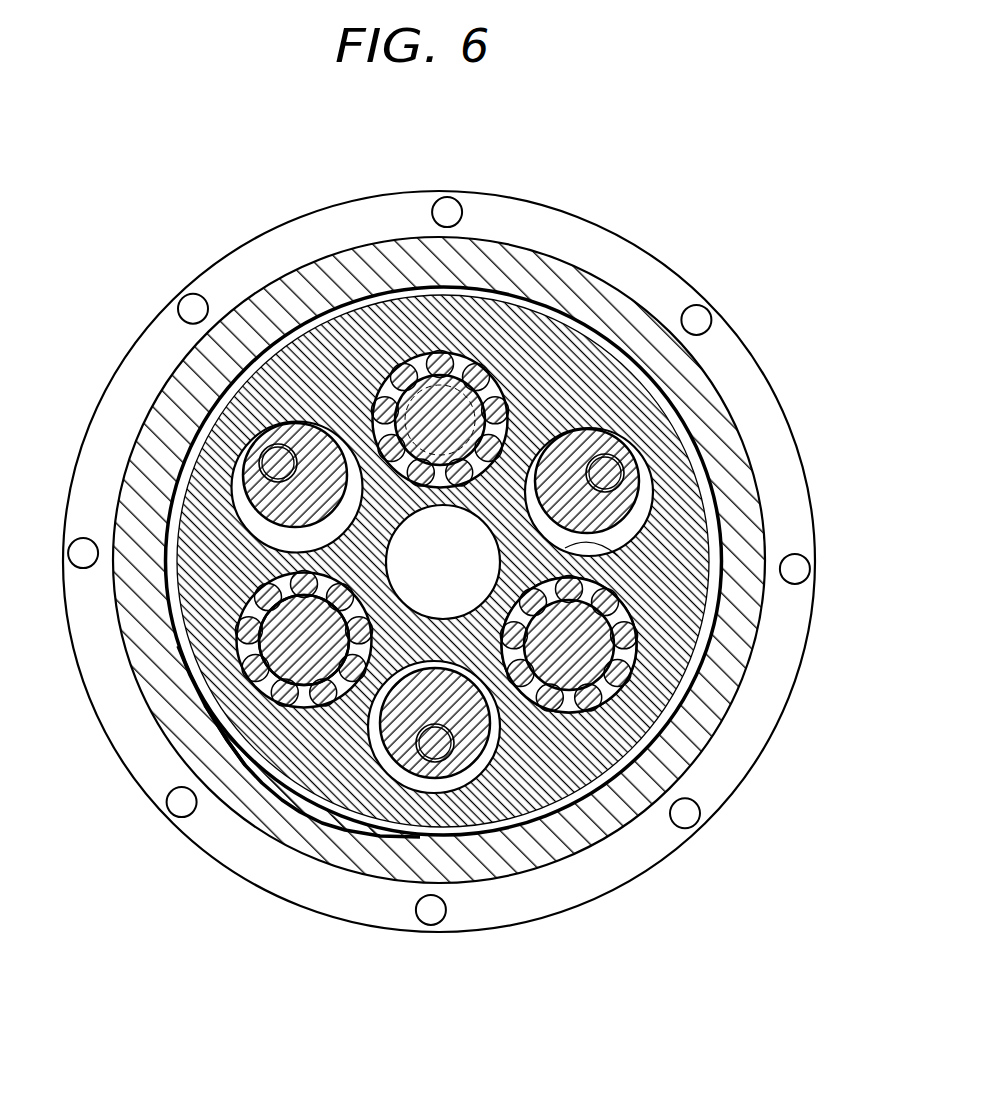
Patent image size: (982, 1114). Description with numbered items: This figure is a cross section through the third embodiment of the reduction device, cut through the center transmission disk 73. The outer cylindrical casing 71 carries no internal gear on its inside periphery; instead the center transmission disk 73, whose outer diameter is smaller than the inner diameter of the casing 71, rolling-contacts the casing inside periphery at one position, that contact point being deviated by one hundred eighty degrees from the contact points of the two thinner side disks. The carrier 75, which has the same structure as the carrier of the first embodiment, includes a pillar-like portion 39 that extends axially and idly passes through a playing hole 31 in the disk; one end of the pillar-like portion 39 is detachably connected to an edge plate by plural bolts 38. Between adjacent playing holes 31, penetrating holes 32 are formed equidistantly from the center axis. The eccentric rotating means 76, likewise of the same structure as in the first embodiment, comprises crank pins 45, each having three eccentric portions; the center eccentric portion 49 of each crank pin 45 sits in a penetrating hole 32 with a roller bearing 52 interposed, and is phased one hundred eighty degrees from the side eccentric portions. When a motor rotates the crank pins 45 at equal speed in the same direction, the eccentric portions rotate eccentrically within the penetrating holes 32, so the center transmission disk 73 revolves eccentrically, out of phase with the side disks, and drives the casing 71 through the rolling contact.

The casing 71 is at (553, 277).
The center transmission disk 73 is at (560, 372).
The carrier 75 is at (648, 508).
The playing hole 31 is at (610, 557).
The eccentric rotating means 76 is at (626, 657).
The penetrating hole 32 is at (572, 712).
The pillar-like portion 39 is at (440, 712).
The bolt 38 is at (437, 735).
The crank pin 45 is at (270, 677).
The center eccentric portion 49 is at (300, 628).
The roller bearing 52 is at (213, 704).